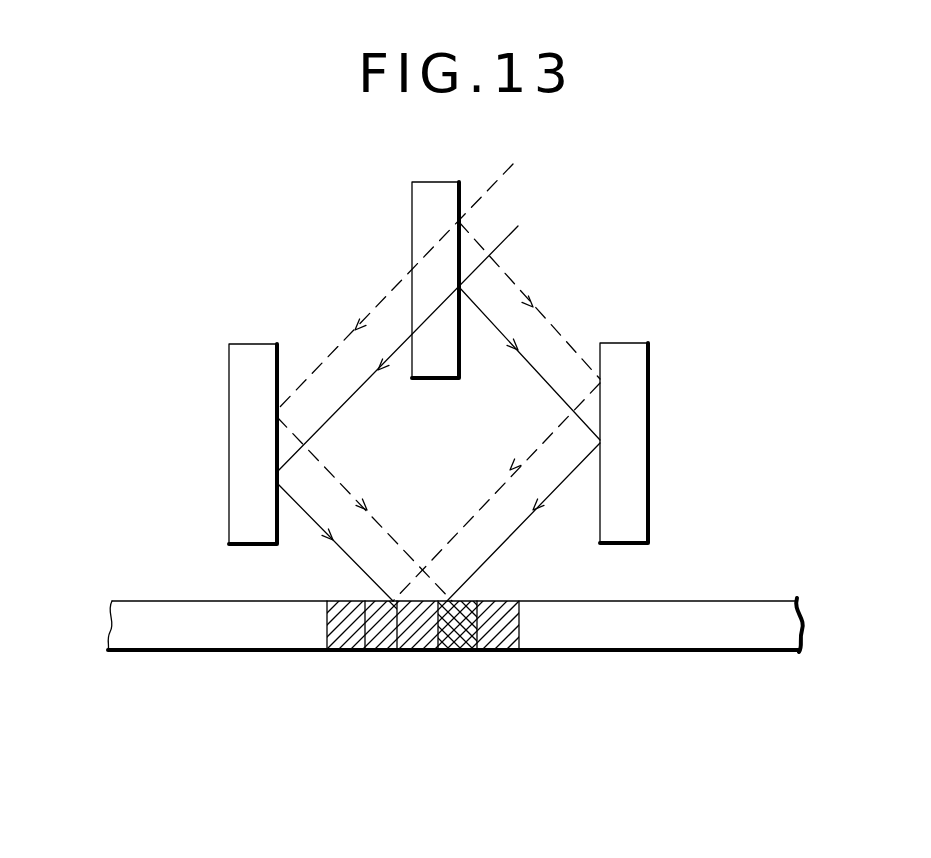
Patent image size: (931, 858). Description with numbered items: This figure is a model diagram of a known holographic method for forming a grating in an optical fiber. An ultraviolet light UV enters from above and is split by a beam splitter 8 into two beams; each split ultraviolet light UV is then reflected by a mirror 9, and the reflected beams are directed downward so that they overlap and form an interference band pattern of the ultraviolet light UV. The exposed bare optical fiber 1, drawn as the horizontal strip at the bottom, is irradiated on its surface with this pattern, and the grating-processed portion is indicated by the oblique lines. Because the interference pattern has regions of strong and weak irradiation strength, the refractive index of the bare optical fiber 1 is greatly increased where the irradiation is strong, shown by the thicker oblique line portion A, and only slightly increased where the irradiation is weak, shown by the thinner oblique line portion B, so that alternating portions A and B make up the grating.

The bare optical fiber 1 is at (710, 607).
The beam splitter 8 is at (418, 218).
The mirror 9 is at (635, 435).
The ultraviolet light Uv is at (497, 186).
The thicker oblique line portion A is at (378, 650).
The thinner oblique line portion B is at (338, 650).